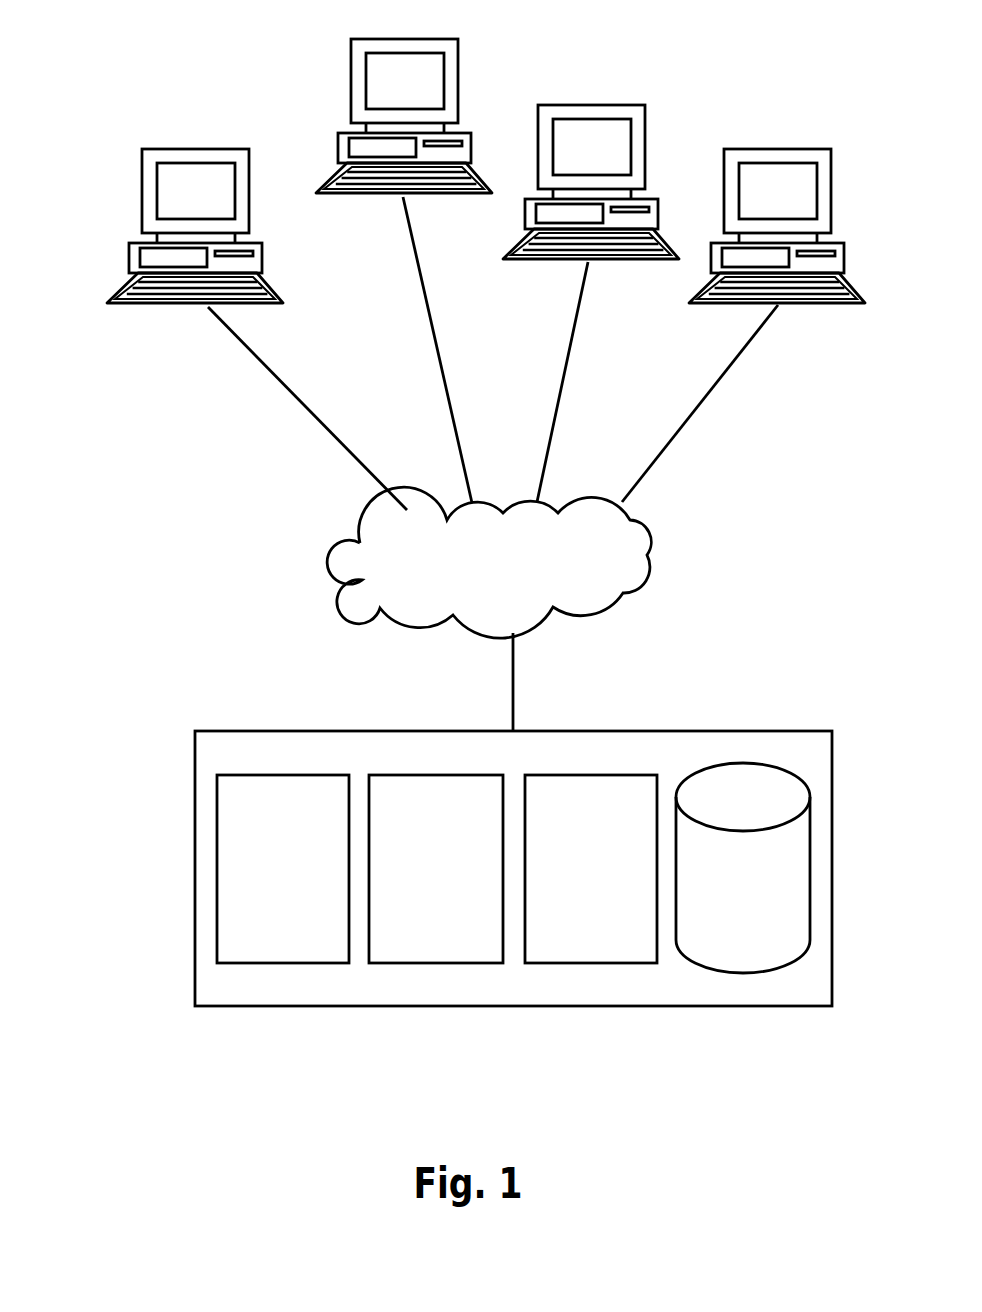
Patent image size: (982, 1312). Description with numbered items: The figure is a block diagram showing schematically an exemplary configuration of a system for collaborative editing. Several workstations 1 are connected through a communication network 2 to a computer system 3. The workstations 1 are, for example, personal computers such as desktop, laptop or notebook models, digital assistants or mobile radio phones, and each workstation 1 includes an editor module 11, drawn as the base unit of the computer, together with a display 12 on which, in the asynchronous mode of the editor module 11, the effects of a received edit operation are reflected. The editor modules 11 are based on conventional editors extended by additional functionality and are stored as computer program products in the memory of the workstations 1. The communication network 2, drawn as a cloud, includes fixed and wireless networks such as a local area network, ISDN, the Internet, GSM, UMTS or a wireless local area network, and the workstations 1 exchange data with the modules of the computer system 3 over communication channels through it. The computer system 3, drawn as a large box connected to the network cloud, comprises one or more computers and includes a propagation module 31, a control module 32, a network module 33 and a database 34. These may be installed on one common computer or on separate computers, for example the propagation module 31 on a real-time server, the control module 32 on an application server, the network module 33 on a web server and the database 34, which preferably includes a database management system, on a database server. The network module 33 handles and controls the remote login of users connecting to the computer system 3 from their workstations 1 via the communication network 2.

The workstation 1 is at (171, 257).
The editor module 11 is at (148, 258).
The display 12 is at (175, 185).
The communication network 2 is at (345, 567).
The computer system 3 is at (469, 913).
The propagation module 31 is at (426, 938).
The control module 32 is at (590, 938).
The network module 33 is at (240, 840).
The database 34 is at (755, 940).